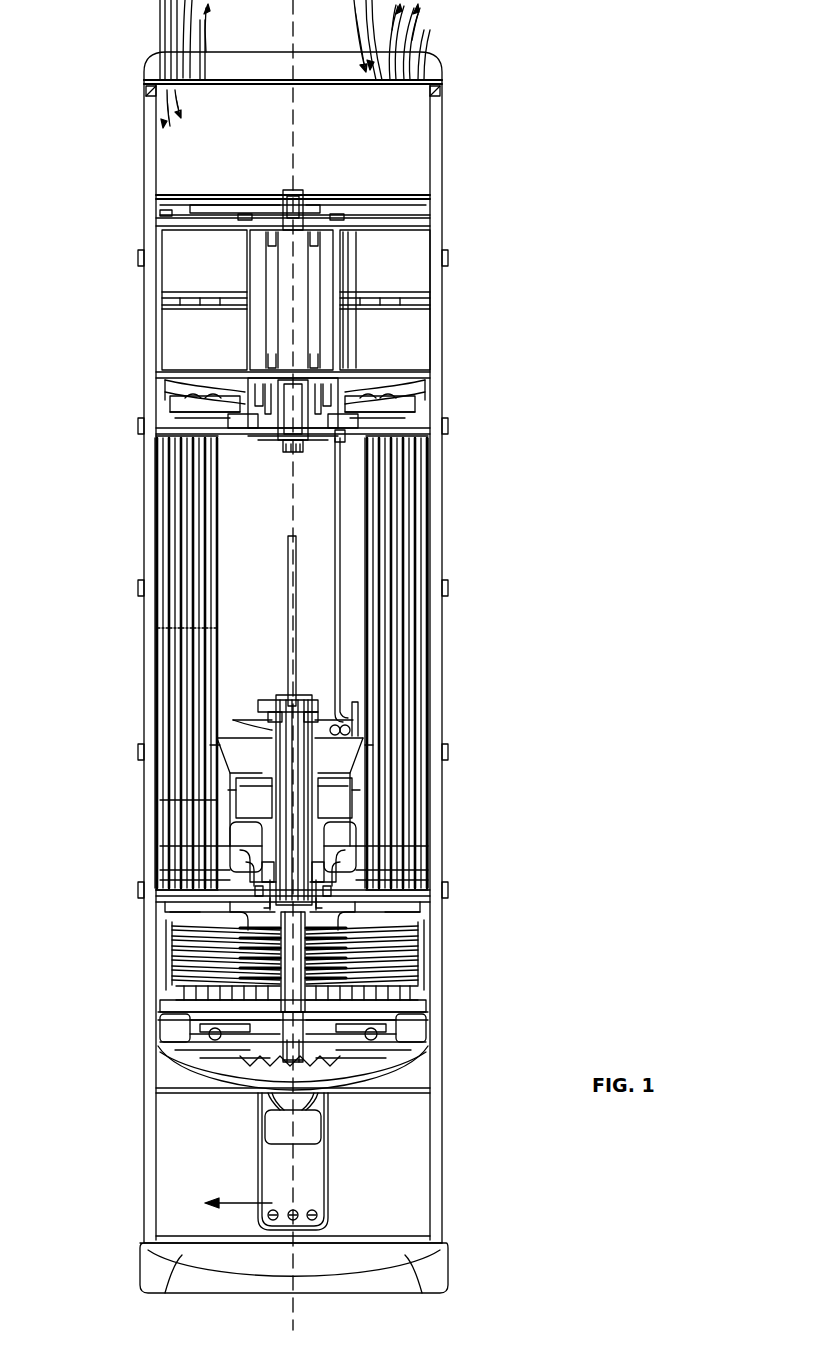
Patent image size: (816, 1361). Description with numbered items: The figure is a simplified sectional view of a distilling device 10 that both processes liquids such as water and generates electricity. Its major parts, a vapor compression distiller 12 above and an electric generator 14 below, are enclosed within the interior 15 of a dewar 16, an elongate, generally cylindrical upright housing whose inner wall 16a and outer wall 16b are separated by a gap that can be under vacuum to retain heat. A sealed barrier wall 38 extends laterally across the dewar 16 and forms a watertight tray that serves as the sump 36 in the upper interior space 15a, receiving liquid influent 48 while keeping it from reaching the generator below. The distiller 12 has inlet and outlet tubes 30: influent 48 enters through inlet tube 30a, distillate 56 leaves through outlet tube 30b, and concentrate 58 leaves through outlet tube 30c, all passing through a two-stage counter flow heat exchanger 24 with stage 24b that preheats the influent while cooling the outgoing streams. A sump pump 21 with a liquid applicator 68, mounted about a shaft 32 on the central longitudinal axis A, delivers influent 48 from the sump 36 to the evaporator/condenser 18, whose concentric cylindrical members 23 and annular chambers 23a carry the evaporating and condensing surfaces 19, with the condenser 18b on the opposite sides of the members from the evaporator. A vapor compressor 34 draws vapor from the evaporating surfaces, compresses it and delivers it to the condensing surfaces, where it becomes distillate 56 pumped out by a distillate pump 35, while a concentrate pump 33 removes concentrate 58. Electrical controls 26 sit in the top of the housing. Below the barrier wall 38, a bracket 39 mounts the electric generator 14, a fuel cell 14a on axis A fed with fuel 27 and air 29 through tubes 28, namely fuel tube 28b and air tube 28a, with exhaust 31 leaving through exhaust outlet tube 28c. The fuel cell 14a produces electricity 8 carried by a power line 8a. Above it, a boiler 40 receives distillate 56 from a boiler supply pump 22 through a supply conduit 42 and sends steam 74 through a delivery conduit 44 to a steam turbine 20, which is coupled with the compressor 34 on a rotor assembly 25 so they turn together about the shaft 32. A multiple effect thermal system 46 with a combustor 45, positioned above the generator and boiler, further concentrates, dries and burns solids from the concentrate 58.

The distilling device 10 is at (606, 275).
The vapor compression distiller 12 is at (404, 474).
The electric generator 14 is at (335, 1161).
The fuel cell 14a is at (312, 1168).
The interior 15 is at (412, 1201).
The upper interior space 15a is at (444, 540).
The dewar 16 is at (441, 502).
The inner wall 16a is at (155, 538).
The outer wall 16b is at (146, 518).
The evaporator/condenser 18 is at (471, 663).
The condenser 18b is at (184, 800).
The condenser 19 is at (395, 826).
The steam turbine 20 is at (325, 797).
The sump pump 21 is at (387, 895).
The liquid applicator 68 is at (358, 893).
The boiler supply pump 22 is at (320, 704).
The concentric cylindrical members 23 is at (182, 684).
The annular chambers 23a is at (170, 628).
The counter flow heat exchanger 24 is at (412, 254).
The second stage 24b is at (416, 346).
The rotor assembly 25 is at (345, 758).
The electrical controls 26 is at (378, 180).
The fuel 27 is at (160, 108).
The tubes 28 is at (130, 62).
The air tube 28a is at (158, 13).
The fuel tube 28b is at (156, 41).
The exhaust outlet tube 28c is at (200, 64).
The air 29 is at (180, 100).
The inlet and outlet tubes 30 is at (478, 102).
The inlet tube 30a is at (362, 42).
The distillate outlet tube 30b is at (420, 32).
The concentrate outlet tube 30c is at (416, 70).
The exhaust 31 is at (210, 35).
The shaft 32 is at (301, 702).
The concentrate pump 33 is at (250, 882).
The vapor compressor 34 is at (258, 876).
The distillate pump 35 is at (272, 748).
The sump 36 is at (190, 878).
The barrier wall 38 is at (205, 896).
The bracket 39 is at (172, 1084).
The boiler 40 is at (274, 1132).
The supply conduit 42 is at (230, 1108).
The delivery conduit 44 is at (352, 1105).
The steam 74 is at (310, 1097).
The combustor 45 is at (244, 962).
The multiple effect thermal system 46 is at (172, 970).
The liquid influent 48 is at (358, 30).
The liquid distillate 56 is at (420, 22).
The concentrate 58 is at (432, 42).
The electricity 8 is at (222, 1186).
The power line 8a is at (240, 1200).
The central longitudinal axis A is at (293, 1202).